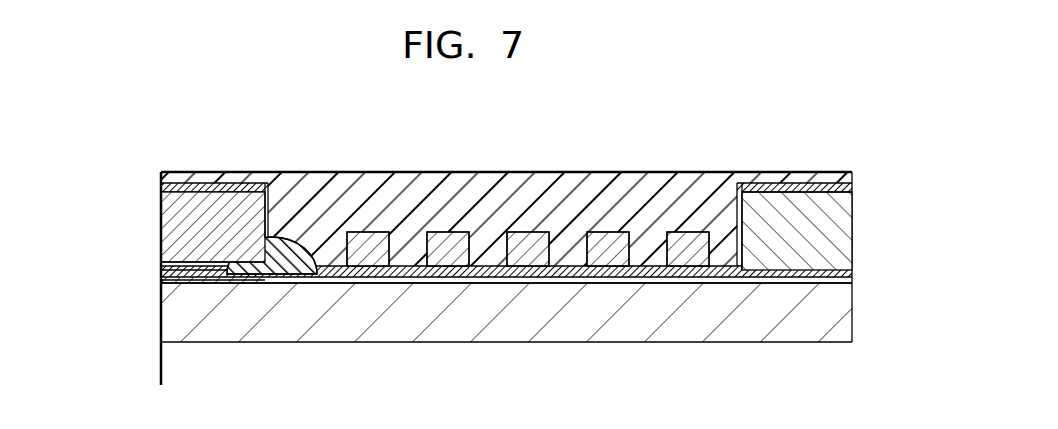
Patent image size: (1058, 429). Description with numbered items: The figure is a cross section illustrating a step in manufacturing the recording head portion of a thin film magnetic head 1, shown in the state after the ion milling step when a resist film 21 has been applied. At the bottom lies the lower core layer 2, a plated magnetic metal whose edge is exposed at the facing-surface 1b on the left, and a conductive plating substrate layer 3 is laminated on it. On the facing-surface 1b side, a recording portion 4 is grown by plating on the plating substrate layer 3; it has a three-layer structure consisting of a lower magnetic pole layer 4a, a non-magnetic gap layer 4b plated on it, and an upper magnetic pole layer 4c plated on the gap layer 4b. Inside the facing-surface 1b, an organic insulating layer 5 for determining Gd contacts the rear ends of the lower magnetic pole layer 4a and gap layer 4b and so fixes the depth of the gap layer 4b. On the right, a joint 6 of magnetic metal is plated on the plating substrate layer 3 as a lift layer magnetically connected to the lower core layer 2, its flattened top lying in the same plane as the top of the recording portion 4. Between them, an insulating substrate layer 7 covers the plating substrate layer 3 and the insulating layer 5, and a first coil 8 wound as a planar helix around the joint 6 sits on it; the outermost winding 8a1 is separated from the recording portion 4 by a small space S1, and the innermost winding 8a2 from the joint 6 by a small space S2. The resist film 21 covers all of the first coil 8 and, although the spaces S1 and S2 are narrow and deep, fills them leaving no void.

The thin film magnetic head 1 is at (150, 363).
The facing-surface 1b is at (160, 315).
The lower core layer 2 is at (715, 318).
The plating substrate layer 3 is at (193, 285).
The recording portion 4 is at (108, 203).
The lower magnetic pole layer 4a is at (162, 276).
The gap layer 4b is at (162, 268).
The upper magnetic pole layer 4c is at (162, 230).
The insulating layer for determining Gd 5 is at (257, 283).
The joint 6 is at (800, 250).
The insulating substrate layer 7 is at (602, 275).
The first coil 8 is at (522, 287).
The conductive layer of the outermost winding 8a1 is at (363, 232).
The conductive layer of the innermost winding 8a2 is at (690, 232).
The resist film 21 is at (498, 200).
The space between the recording portion and the outermost conductive layer S1 is at (332, 240).
The space between the joint and the innermost conductive layer S2 is at (728, 250).